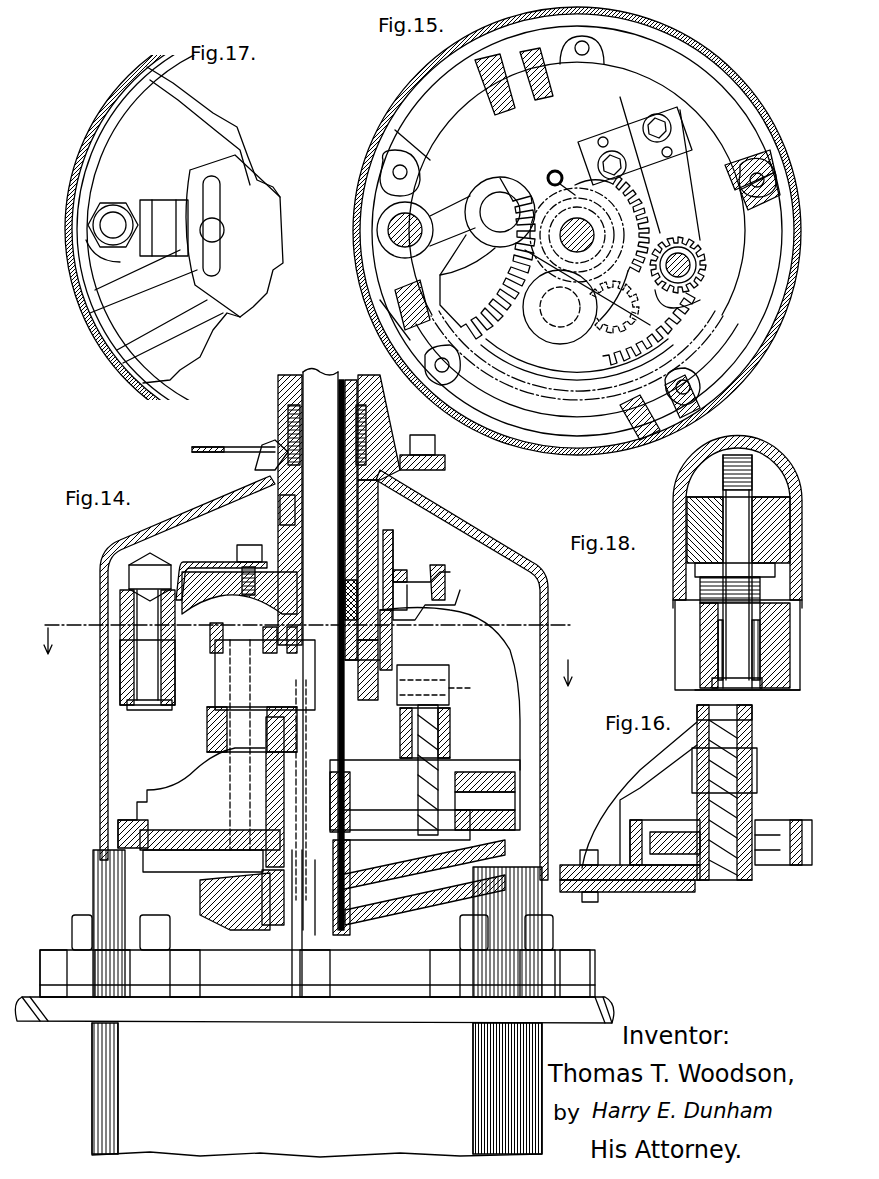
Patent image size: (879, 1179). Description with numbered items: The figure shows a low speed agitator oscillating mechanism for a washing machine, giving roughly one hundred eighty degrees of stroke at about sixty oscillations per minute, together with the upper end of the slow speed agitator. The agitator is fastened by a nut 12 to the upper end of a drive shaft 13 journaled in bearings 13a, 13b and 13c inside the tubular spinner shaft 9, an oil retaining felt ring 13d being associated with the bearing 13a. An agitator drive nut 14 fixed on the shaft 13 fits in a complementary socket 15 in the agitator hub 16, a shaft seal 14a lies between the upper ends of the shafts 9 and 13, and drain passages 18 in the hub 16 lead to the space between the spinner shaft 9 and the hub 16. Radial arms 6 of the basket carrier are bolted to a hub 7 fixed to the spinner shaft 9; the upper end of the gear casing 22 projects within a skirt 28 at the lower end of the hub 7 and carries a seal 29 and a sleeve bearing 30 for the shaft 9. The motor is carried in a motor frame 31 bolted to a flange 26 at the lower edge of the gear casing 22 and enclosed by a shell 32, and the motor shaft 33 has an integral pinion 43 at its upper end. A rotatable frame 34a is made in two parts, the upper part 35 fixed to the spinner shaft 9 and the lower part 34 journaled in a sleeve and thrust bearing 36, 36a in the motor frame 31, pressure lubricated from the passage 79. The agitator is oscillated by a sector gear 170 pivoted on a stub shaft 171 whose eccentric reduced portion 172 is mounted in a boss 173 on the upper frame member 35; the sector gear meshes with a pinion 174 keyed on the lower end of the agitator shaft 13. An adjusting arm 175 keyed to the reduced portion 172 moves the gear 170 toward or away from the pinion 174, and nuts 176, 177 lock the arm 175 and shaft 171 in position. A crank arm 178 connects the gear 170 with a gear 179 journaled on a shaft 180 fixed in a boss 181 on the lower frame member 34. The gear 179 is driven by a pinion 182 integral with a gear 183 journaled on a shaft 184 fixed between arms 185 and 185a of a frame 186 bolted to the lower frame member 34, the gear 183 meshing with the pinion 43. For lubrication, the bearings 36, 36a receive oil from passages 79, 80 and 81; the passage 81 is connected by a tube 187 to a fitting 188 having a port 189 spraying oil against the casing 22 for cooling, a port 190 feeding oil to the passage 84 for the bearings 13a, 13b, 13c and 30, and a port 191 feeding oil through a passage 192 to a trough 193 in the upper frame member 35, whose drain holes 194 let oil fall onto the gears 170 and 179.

In FIG. 14, the radial arms 6 is at (205, 455).
In FIG. 14, the hub 7 is at (435, 462).
In FIG. 14, the tubular spinner shaft 9 is at (285, 398).
In FIG. 18, the tubular spinner shaft 9 is at (765, 680).
In FIG. 18, the nut 12 is at (673, 556).
In FIG. 14, the drive shaft 13 is at (351, 650).
In FIG. 18, the drive shaft 13 is at (730, 640).
In FIG. 18, the bearing 13a is at (720, 660).
In FIG. 14, the bearing 13b is at (282, 505).
In FIG. 14, the bearing 13c is at (345, 628).
In FIG. 18, the oil retaining felt ring 13d is at (715, 678).
In FIG. 18, the agitator drive nut 14 is at (700, 520).
In FIG. 18, the shaft seal 14a is at (700, 568).
In FIG. 14, the socket 15 is at (307, 651).
In FIG. 18, the socket 15 is at (770, 480).
In FIG. 18, the agitator hub 16 is at (800, 620).
In FIG. 18, the drain passages 18 is at (695, 615).
In FIG. 15, the gear casing 22 is at (562, 450).
In FIG. 17, the gear casing 22 is at (98, 320).
In FIG. 14, the gear casing 22 is at (98, 876).
In FIG. 14, the flange 26 is at (398, 985).
In FIG. 14, the skirt 28 is at (265, 460).
In FIG. 14, the seal 29 is at (285, 410).
In FIG. 14, the sleeve bearing 30 is at (282, 518).
In FIG. 14, the motor frame 31 is at (440, 880).
In FIG. 14, the shell 32 is at (90, 1060).
In FIG. 14, the motor shaft 33 is at (296, 915).
In FIG. 14, the lower half of rotatable frame 34 is at (160, 855).
In FIG. 14, the rotatable frame 34a is at (147, 805).
In FIG. 15, the upper half of rotatable frame 35 is at (612, 438).
In FIG. 17, the upper half of rotatable frame 35 is at (118, 342).
In FIG. 14, the upper half of rotatable frame 35 is at (475, 612).
In FIG. 14, the sleeve bearing 36 is at (275, 915).
In FIG. 14, the thrust washer 36a is at (225, 882).
In FIG. 14, the pinion 43 is at (265, 826).
In FIG. 14, the oil passage 79 is at (440, 900).
In FIG. 14, the oil passage 80 is at (335, 912).
In FIG. 14, the oil passage 81 is at (334, 890).
In FIG. 14, the passage 84 is at (375, 560).
In FIG. 15, the sector gear 170 is at (500, 318).
In FIG. 14, the sector gear 170 is at (120, 685).
In FIG. 15, the stub shaft 171 is at (408, 226).
In FIG. 14, the stub shaft 171 is at (143, 712).
In FIG. 15, the reduced portion 172 is at (380, 240).
In FIG. 17, the reduced portion 172 is at (116, 216).
In FIG. 14, the reduced portion 172 is at (125, 620).
In FIG. 17, the boss 173 is at (95, 255).
In FIG. 14, the boss 173 is at (125, 596).
In FIG. 15, the pinion 174 is at (555, 200).
In FIG. 14, the pinion 174 is at (365, 652).
In FIG. 17, the adjusting arm 175 is at (238, 168).
In FIG. 14, the adjusting arm 175 is at (195, 560).
In FIG. 17, the nut 176 is at (203, 236).
In FIG. 17, the nut 177 is at (140, 222).
In FIG. 15, the crank arm 178 is at (575, 310).
In FIG. 14, the crank arm 178 is at (268, 680).
In FIG. 15, the gear 179 is at (680, 318).
In FIG. 14, the gear 179 is at (208, 742).
In FIG. 14, the shaft 180 is at (282, 790).
In FIG. 14, the boss 181 is at (265, 812).
In FIG. 15, the pinion 182 is at (700, 283).
In FIG. 14, the pinion 182 is at (450, 725).
In FIG. 16, the pinion 182 is at (752, 765).
In FIG. 15, the gear 183 is at (672, 335).
In FIG. 14, the gear 183 is at (500, 802).
In FIG. 16, the gear 183 is at (805, 862).
In FIG. 15, the shaft 184 is at (678, 240).
In FIG. 14, the shaft 184 is at (440, 760).
In FIG. 16, the shaft 184 is at (735, 812).
In FIG. 15, the arm 185 is at (690, 160).
In FIG. 14, the arm 185 is at (452, 672).
In FIG. 16, the arm 185 is at (752, 733).
In FIG. 14, the arm 185a is at (445, 665).
In FIG. 16, the arm 185a is at (733, 710).
In FIG. 16, the frame 186 is at (622, 768).
In FIG. 15, the tube 187 is at (555, 170).
In FIG. 14, the tube 187 is at (388, 612).
In FIG. 14, the fitting 188 is at (392, 538).
In FIG. 14, the port 189 is at (398, 548).
In FIG. 14, the port 190 is at (345, 598).
In FIG. 14, the port 191 is at (398, 572).
In FIG. 14, the passage 192 is at (410, 575).
In FIG. 14, the trough 193 is at (440, 576).
In FIG. 14, the drain holes 194 is at (460, 600).